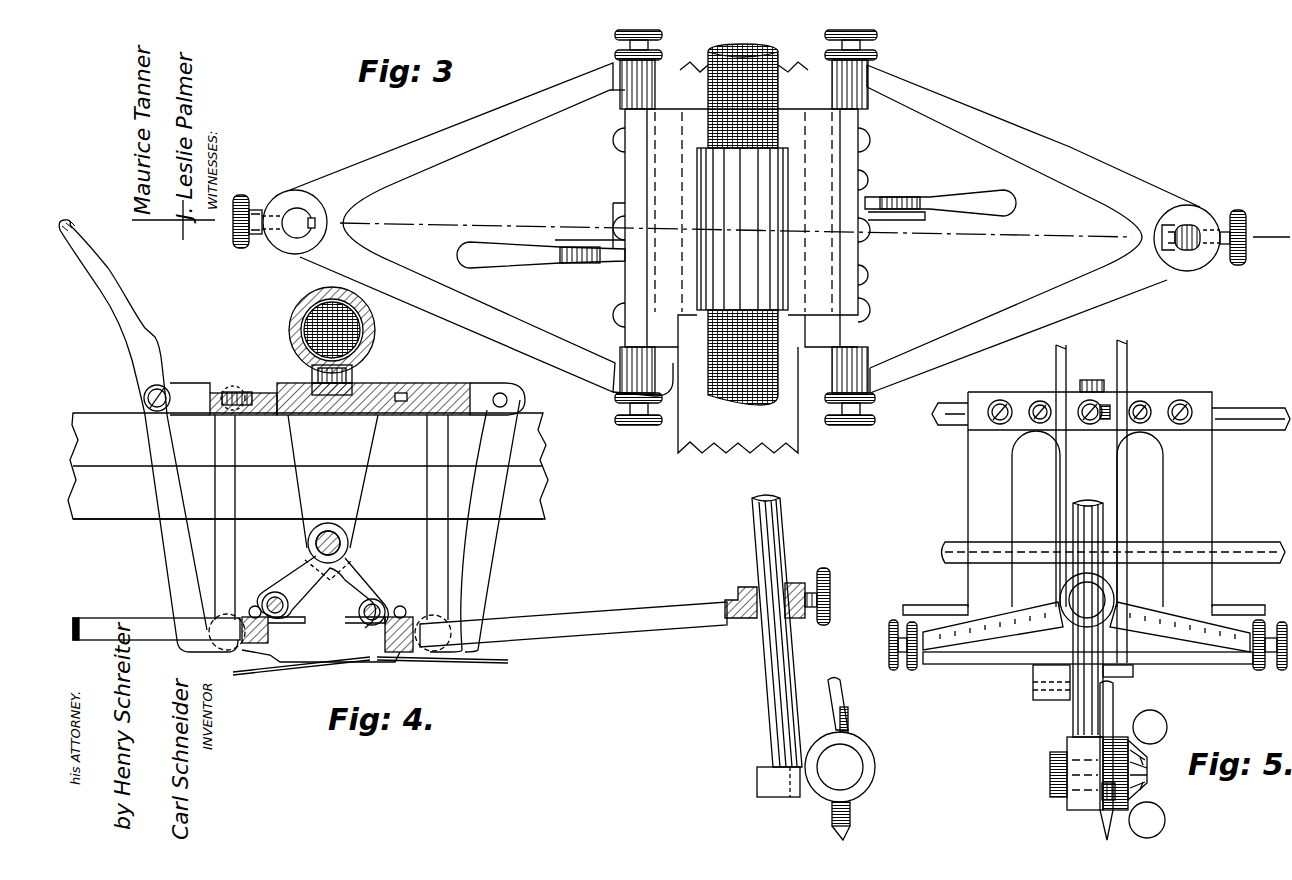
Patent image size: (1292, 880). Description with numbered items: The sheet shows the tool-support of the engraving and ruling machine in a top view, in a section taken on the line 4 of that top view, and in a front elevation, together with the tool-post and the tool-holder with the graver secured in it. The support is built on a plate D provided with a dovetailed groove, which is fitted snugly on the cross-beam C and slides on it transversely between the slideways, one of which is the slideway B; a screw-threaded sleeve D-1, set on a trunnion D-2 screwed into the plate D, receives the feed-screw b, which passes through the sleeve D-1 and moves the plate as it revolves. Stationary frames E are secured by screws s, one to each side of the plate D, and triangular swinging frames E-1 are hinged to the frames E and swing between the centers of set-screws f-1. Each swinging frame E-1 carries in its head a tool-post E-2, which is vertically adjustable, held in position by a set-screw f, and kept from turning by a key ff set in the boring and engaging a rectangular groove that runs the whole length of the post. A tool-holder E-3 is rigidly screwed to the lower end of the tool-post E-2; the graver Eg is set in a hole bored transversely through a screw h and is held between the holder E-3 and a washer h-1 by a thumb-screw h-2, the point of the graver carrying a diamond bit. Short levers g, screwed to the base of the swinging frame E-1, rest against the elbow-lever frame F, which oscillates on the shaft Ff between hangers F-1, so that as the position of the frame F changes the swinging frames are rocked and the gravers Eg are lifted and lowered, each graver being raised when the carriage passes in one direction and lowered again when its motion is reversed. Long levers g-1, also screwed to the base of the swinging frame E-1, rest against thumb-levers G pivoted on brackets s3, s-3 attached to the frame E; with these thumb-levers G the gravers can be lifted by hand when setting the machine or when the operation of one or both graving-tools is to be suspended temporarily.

In FIG. 3, the section line 4 is at (710, 234).
In FIG. 3, the triangular swinging frame E-1 is at (430, 170).
In FIG. 4, the triangular swinging frame E-1 is at (122, 612).
In FIG. 5, the triangular swinging frame E-1 is at (1027, 652).
In FIG. 3, the tool-post E-2 is at (292, 240).
In FIG. 4, the tool-post E-2 is at (758, 546).
In FIG. 3, the tool-holder E-3 is at (645, 83).
In FIG. 4, the tool-holder E-3 is at (886, 752).
In FIG. 5, the tool-holder E-3 is at (1080, 792).
In FIG. 3, the key ff is at (312, 226).
In FIG. 3, the set-screw f is at (236, 242).
In FIG. 4, the set-screw f is at (828, 575).
In FIG. 5, the set-screw f is at (1087, 618).
In FIG. 3, the set-screws f-1 is at (662, 48).
In FIG. 5, the set-screws f-1 is at (900, 672).
In FIG. 3, the cross-beam C is at (743, 257).
In FIG. 4, the cross-beam C is at (333, 481).
In FIG. 3, the plate D is at (830, 208).
In FIG. 4, the plate D is at (392, 386).
In FIG. 3, the screw-threaded sleeve D-1 is at (742, 229).
In FIG. 4, the screw-threaded sleeve D-1 is at (370, 335).
In FIG. 4, the trunnion D-2 is at (312, 372).
In FIG. 3, the feed-screw b is at (712, 392).
In FIG. 4, the feed-screw b is at (304, 327).
In FIG. 3, the brackets s3 is at (612, 216).
In FIG. 5, the brackets s3 is at (1095, 425).
In FIG. 4, the brackets s-3 is at (144, 398).
In FIG. 5, the screws s is at (1005, 398).
In FIG. 3, the thumb-lever G is at (475, 257).
In FIG. 4, the thumb-lever G is at (170, 540).
In FIG. 5, the thumb-lever G is at (1066, 360).
In FIG. 4, the slideway B is at (308, 466).
In FIG. 4, the stationary frame E is at (432, 452).
In FIG. 5, the stationary frame E is at (1090, 499).
In FIG. 4, the hangers F-1 is at (328, 523).
In FIG. 4, the elbow-lever frame F is at (360, 590).
In FIG. 4, the shaft Ff is at (310, 546).
In FIG. 5, the shaft Ff is at (1250, 535).
In FIG. 4, the short levers g is at (360, 627).
In FIG. 4, the long levers g-1 is at (270, 668).
In FIG. 4, the graver Eg is at (846, 695).
In FIG. 5, the graver Eg is at (1100, 822).
In FIG. 4, the screw h is at (840, 767).
In FIG. 5, the screw h is at (1050, 766).
In FIG. 5, the washer h-1 is at (1122, 735).
In FIG. 4, the thumb-screw h-2 is at (850, 722).
In FIG. 5, the thumb-screw h-2 is at (1150, 727).